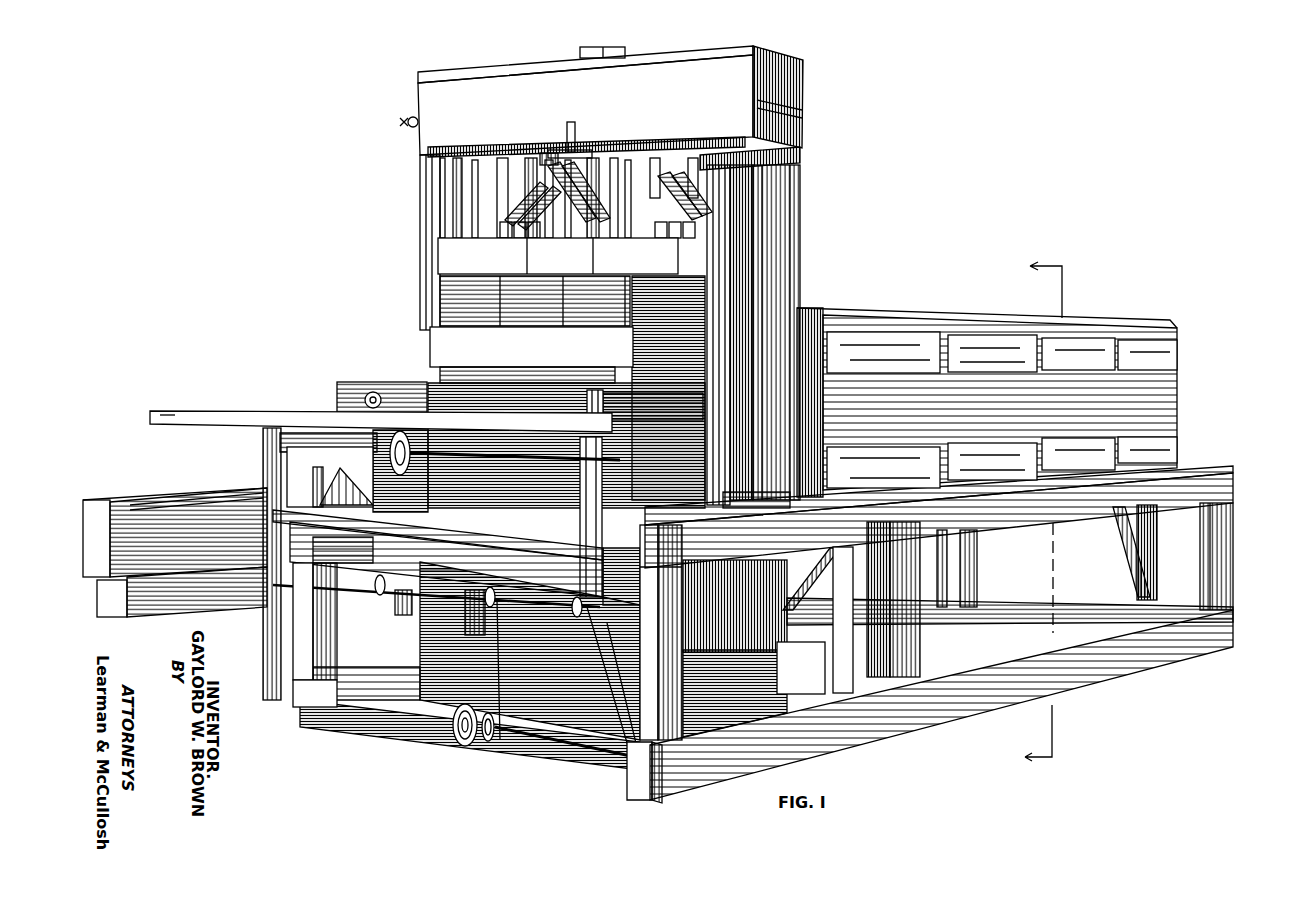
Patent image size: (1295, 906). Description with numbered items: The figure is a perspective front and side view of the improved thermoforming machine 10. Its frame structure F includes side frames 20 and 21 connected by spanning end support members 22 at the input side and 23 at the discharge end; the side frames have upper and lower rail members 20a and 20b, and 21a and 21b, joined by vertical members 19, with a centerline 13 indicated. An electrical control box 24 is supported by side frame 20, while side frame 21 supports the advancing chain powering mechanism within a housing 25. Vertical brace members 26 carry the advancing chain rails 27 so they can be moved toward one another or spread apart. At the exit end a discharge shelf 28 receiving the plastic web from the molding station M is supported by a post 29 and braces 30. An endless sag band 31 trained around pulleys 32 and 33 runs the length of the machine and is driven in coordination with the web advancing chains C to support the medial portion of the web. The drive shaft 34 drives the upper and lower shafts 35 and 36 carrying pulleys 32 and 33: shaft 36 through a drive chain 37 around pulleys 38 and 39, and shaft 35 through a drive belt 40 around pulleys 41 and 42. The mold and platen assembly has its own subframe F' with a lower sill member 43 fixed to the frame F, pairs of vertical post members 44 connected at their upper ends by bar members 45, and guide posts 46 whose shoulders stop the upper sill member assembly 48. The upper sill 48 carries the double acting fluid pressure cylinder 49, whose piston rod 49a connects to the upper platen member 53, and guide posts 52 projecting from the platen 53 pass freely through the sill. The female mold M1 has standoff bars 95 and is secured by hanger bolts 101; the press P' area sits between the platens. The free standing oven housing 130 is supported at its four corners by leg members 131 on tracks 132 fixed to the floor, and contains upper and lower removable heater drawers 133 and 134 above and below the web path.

The machine 10 is at (1170, 320).
The frame centerline 13 is at (1028, 517).
The vertical members 19 is at (293, 640).
The side frame 20 is at (962, 702).
The upper rail member 20a is at (1233, 490).
The lower rail member 20b is at (1018, 688).
The side frame 21 is at (790, 640).
The upper rail member 21a is at (330, 478).
The lower rail member 21b is at (295, 725).
The end support member 22 is at (1008, 578).
The end support member 23 is at (420, 730).
The electrical control box 24 is at (920, 648).
The housing 25 is at (100, 616).
The vertical brace members 26 is at (340, 420).
The advancing chain rails 27 is at (296, 345).
The discharge shelf 28 is at (464, 430).
The post 29 is at (263, 482).
The braces 30 is at (262, 565).
The endless sag band 31 is at (383, 392).
The pulley 32 is at (440, 426).
The pulley 33 is at (456, 746).
The drive shaft 34 is at (372, 598).
The upper shaft 35 is at (266, 432).
The lower shaft 36 is at (540, 745).
The drive chain 37 is at (498, 742).
The pulley 38 is at (498, 578).
The pulley 39 is at (486, 742).
The drive belt 40 is at (612, 762).
The pulley 41 is at (512, 520).
The pulley 42 is at (632, 765).
The lower sill member 43 is at (783, 688).
The vertical post members 44 is at (800, 230).
The bar members 45 is at (795, 160).
The guide posts 46 is at (803, 195).
The upper sill member assembly 48 is at (790, 92).
The fluid pressure operated cylinder 49 is at (612, 46).
The piston rod 49a is at (622, 200).
The guide posts 52 is at (576, 128).
The upper platen member 53 is at (488, 263).
The standoff bars 95 is at (437, 285).
The hanger bolts 101 is at (594, 258).
The oven housing 130 is at (853, 304).
The leg members 131 is at (1145, 518).
The tracks 132 is at (952, 633).
The upper heater drawer 133 is at (1002, 352).
The lower heater drawer 134 is at (1002, 462).
The molding station M is at (390, 314).
The female mold M1 is at (502, 355).
The press P' is at (556, 363).
The web advancing chains C is at (398, 382).
The frame structure F is at (959, 492).
The subframe F' is at (838, 162).